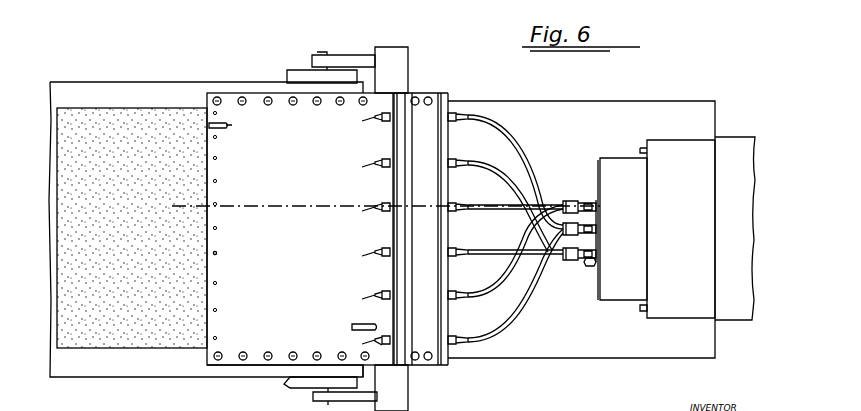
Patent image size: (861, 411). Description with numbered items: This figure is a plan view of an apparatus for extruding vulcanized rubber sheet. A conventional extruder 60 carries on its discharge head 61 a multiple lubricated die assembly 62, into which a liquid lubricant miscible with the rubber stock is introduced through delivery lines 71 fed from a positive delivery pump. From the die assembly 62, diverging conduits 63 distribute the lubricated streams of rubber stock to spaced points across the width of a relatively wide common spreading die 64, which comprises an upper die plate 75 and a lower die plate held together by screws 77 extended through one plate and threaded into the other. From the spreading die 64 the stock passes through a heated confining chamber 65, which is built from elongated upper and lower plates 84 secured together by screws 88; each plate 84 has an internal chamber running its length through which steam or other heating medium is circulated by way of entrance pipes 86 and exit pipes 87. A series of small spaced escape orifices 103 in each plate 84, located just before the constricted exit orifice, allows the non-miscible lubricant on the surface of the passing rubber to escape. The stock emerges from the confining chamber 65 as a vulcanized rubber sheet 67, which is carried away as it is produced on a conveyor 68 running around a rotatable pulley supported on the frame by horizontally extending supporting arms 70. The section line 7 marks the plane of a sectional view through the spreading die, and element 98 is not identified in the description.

The section line 7- 7 is at (185, 189).
The extruder 60 is at (702, 140).
The discharge head 61 is at (619, 166).
The multiple lubricated die assembly 62 is at (590, 268).
The diverging conduits 63 is at (532, 182).
The common spreading die 64 is at (452, 103).
The heated confining chamber 65 is at (277, 93).
The vulcanized rubber sheet 67 is at (128, 305).
The conveyor 68 is at (123, 378).
The supporting arms 70 is at (352, 60).
The delivery lines 71 is at (586, 200).
The upper die plate 75 is at (425, 110).
The screws 77 is at (428, 364).
The upper and lower plates 84 is at (232, 368).
The entrance pipes 86 is at (232, 126).
The exit pipes 87 is at (352, 324).
The screws 88 is at (268, 97).
The nozzle connectors 98 is at (372, 164).
The escape orifices 103 is at (218, 256).